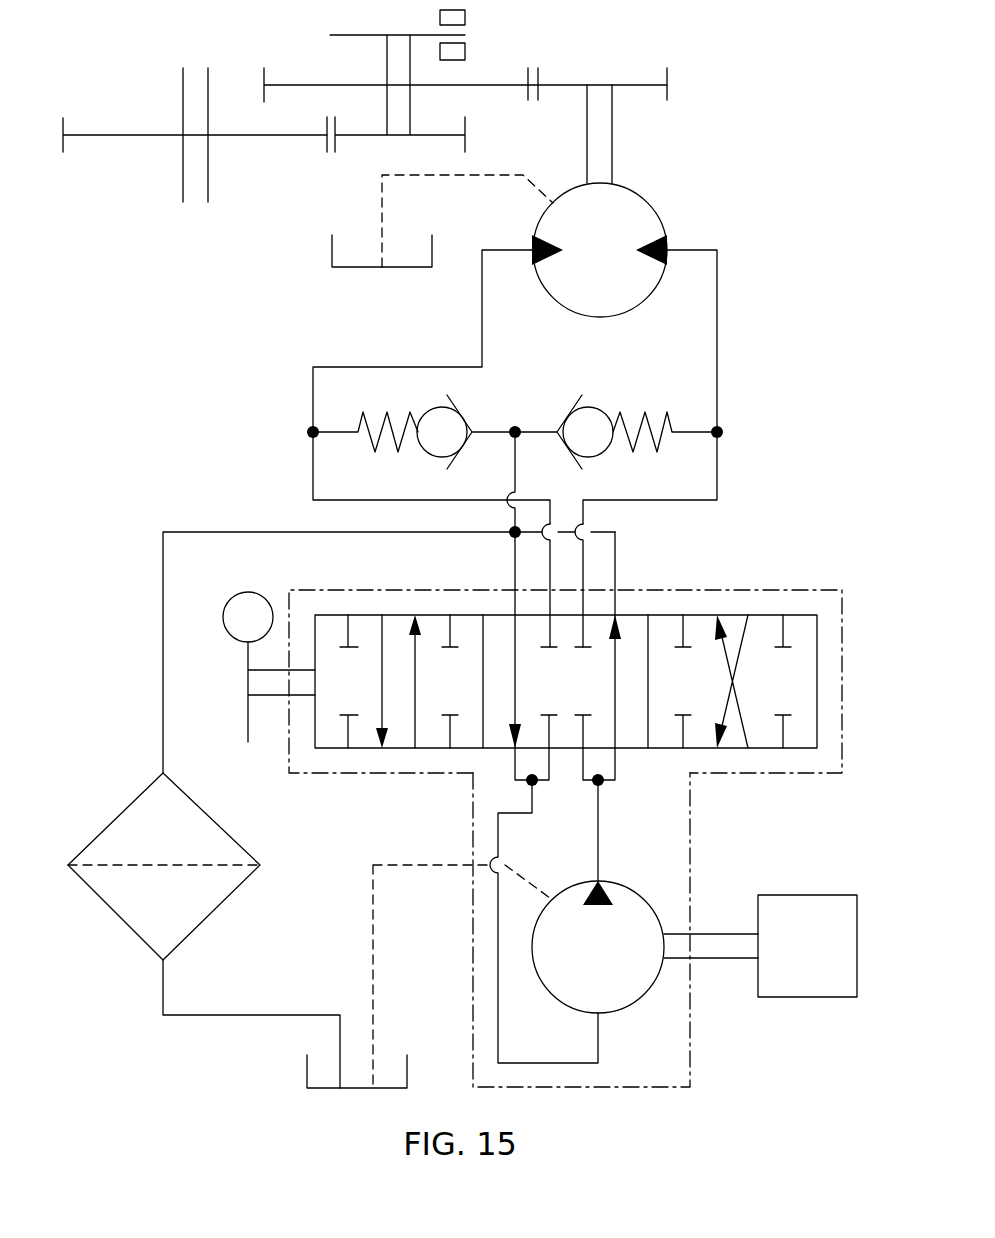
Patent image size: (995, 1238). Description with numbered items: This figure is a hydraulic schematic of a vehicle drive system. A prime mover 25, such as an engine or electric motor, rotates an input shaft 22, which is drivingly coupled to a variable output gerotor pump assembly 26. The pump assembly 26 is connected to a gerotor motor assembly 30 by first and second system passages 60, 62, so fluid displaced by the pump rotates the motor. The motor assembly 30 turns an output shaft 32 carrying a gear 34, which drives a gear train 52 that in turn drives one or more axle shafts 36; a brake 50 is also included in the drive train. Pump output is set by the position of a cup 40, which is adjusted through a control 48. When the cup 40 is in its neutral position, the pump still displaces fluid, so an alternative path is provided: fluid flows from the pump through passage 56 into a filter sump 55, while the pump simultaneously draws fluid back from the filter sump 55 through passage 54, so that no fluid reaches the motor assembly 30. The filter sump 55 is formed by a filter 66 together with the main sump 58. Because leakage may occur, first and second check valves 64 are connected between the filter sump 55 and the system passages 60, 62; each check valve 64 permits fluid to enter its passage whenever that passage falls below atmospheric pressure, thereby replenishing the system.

The input shaft 22 is at (715, 930).
The prime mover 25 is at (807, 946).
The variable output gerotor pump assembly 26 is at (690, 1053).
The gerotor motor assembly 30 is at (647, 203).
The output shaft 32 is at (612, 150).
The gear 34 is at (667, 90).
The axle 36 is at (183, 100).
The cup 40 is at (365, 748).
The control 48 is at (225, 612).
The brake 50 is at (465, 15).
The gear train 52 is at (298, 55).
The passage 54 is at (510, 552).
The filter sump 55 is at (515, 460).
The passage 56 is at (618, 552).
The main sump 58 is at (332, 250).
The first system passage 60 is at (717, 308).
The second system passage 62 is at (482, 308).
The check valves 64 is at (570, 409).
The filter 66 is at (212, 912).